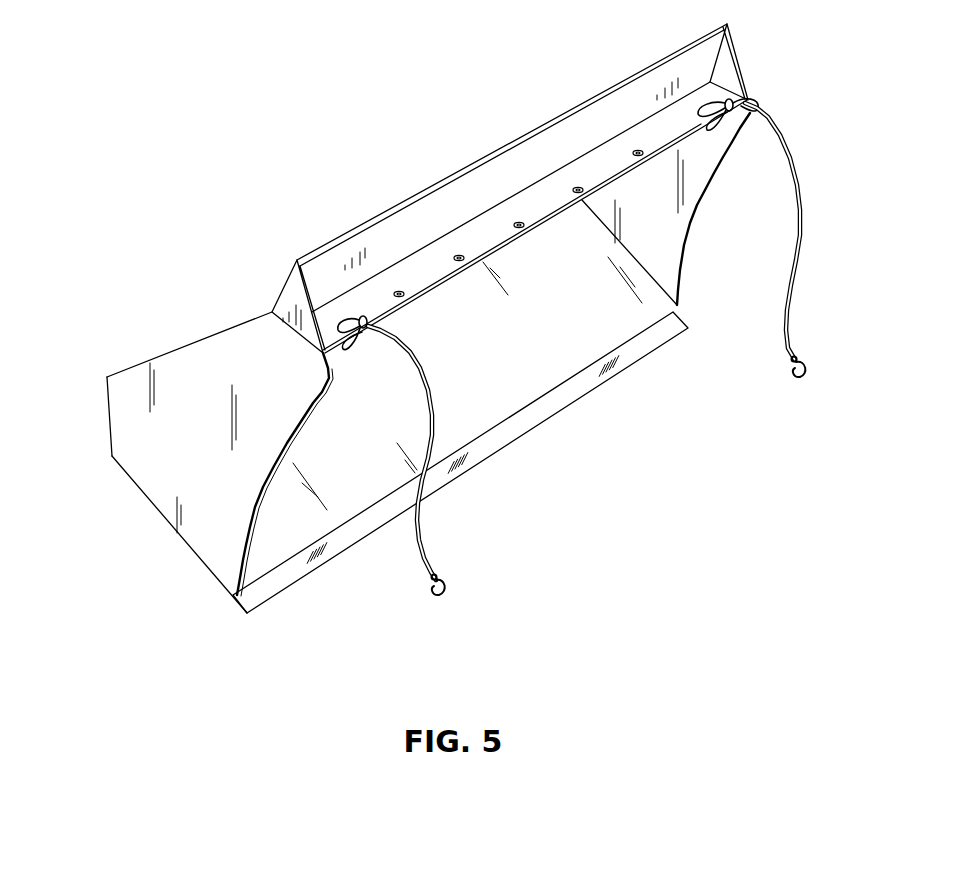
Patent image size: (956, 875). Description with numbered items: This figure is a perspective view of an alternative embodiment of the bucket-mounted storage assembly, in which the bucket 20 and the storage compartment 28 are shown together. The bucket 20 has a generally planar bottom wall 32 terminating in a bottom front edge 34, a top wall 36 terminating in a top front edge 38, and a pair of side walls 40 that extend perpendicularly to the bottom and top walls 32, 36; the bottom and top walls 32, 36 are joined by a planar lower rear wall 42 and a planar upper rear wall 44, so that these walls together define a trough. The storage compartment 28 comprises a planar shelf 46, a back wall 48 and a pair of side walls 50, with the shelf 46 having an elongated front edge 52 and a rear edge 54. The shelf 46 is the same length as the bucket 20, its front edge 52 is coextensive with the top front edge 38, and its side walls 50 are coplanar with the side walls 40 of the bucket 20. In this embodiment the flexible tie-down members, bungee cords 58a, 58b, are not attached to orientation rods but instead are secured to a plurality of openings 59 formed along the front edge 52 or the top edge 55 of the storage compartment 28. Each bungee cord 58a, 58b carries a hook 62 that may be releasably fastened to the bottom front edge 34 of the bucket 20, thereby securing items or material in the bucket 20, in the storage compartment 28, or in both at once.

The bucket 20 is at (124, 494).
The storage compartment 28 is at (735, 96).
The bottom wall 32 is at (533, 345).
The bottom front edge 34 is at (530, 417).
The top wall 36 is at (292, 352).
The top front edge 38 is at (457, 275).
The side walls 40 is at (173, 445).
The lower rear wall 42 is at (108, 416).
The upper rear wall 44 is at (178, 357).
The shelf 46 is at (401, 283).
The back wall 48 is at (461, 203).
The side walls 50 is at (292, 290).
The front edge 52 is at (562, 212).
The rear edge 54 is at (640, 120).
The top edge 55 is at (507, 145).
The bungee cord 58a is at (422, 538).
The bungee cord 58b is at (797, 233).
The aperture 59 is at (520, 230).
The hook 62 is at (433, 595).